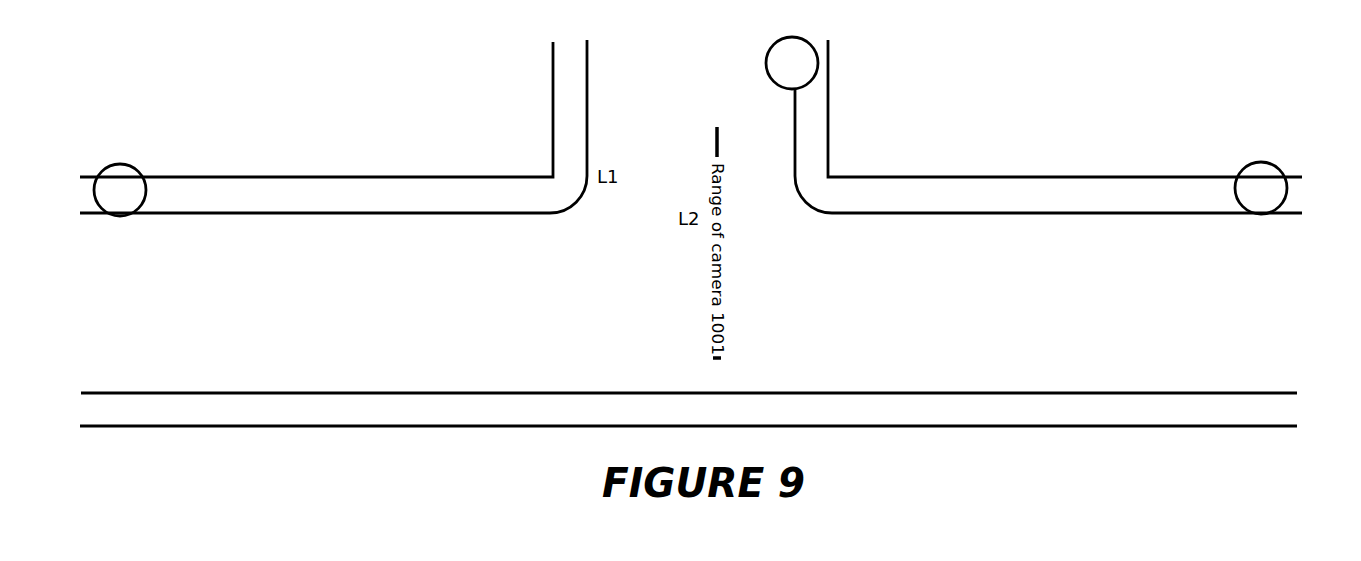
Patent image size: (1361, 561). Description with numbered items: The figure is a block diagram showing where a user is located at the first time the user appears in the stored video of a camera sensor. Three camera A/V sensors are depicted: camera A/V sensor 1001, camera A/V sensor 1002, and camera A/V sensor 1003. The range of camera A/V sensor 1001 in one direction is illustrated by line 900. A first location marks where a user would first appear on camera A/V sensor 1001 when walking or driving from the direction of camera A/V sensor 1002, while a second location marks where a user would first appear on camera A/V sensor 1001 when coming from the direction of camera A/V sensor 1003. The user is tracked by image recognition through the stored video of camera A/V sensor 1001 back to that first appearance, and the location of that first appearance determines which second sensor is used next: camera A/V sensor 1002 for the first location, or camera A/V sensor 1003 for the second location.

The camera A/V sensor 1001 is at (141, 177).
The camera A/V sensor 1002 is at (800, 38).
The camera A/V sensor 1003 is at (1262, 163).
The line 900 is at (717, 392).